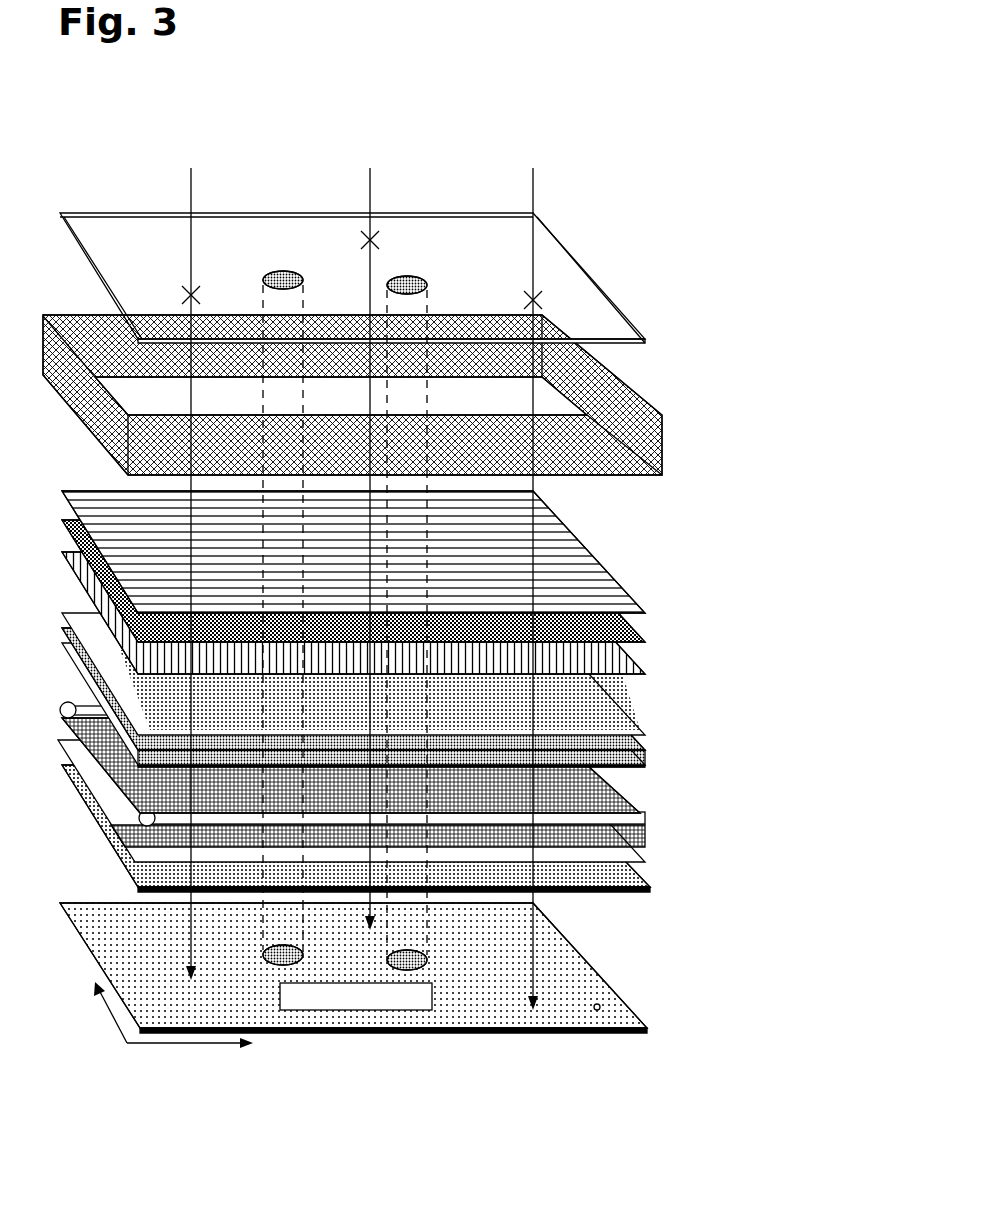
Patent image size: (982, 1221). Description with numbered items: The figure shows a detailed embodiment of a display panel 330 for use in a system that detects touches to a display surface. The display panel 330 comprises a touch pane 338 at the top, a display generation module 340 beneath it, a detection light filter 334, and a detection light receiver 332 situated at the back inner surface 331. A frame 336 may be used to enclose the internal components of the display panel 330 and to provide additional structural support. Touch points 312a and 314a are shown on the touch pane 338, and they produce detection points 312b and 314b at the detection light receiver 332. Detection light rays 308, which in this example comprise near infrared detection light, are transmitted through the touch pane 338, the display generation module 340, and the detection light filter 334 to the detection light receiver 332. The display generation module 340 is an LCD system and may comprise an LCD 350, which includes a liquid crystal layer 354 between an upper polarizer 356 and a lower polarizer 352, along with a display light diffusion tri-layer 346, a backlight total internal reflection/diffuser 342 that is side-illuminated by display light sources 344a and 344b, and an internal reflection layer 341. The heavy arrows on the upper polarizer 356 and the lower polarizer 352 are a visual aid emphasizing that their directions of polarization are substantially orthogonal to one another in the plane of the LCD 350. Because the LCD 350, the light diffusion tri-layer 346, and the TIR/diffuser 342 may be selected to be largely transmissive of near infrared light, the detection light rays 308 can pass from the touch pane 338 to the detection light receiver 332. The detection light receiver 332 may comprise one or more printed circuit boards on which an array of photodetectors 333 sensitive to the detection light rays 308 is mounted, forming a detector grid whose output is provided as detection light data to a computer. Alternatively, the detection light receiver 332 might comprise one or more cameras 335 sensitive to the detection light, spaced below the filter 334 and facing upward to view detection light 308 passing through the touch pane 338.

The display panel 330 is at (762, 82).
The detection light rays 308 is at (363, 572).
The touch point 312a is at (261, 265).
The detection point 312b is at (263, 971).
The touch point 314a is at (447, 263).
The detection point 314b is at (429, 950).
The touch pane 338 is at (597, 273).
The frame 336 is at (590, 464).
The upper polarizer 356 is at (358, 552).
The liquid crystal layer 354 is at (641, 628).
The LCD 350 is at (391, 600).
The lower polarizer 352 is at (619, 676).
The display generation module 340 is at (421, 694).
The display light diffusion tri-layer 346 is at (662, 737).
The display light source 344b is at (68, 706).
The backlight total internal reflection/diffuser 342 is at (607, 780).
The display light source 344a is at (629, 821).
The internal reflection layer 341 is at (138, 856).
The detection light filter 334 is at (623, 890).
The detection light receiver 332 is at (353, 968).
The camera 335 is at (356, 996).
The photodetector 333 is at (600, 1004).
The back inner surface 331 is at (127, 1043).